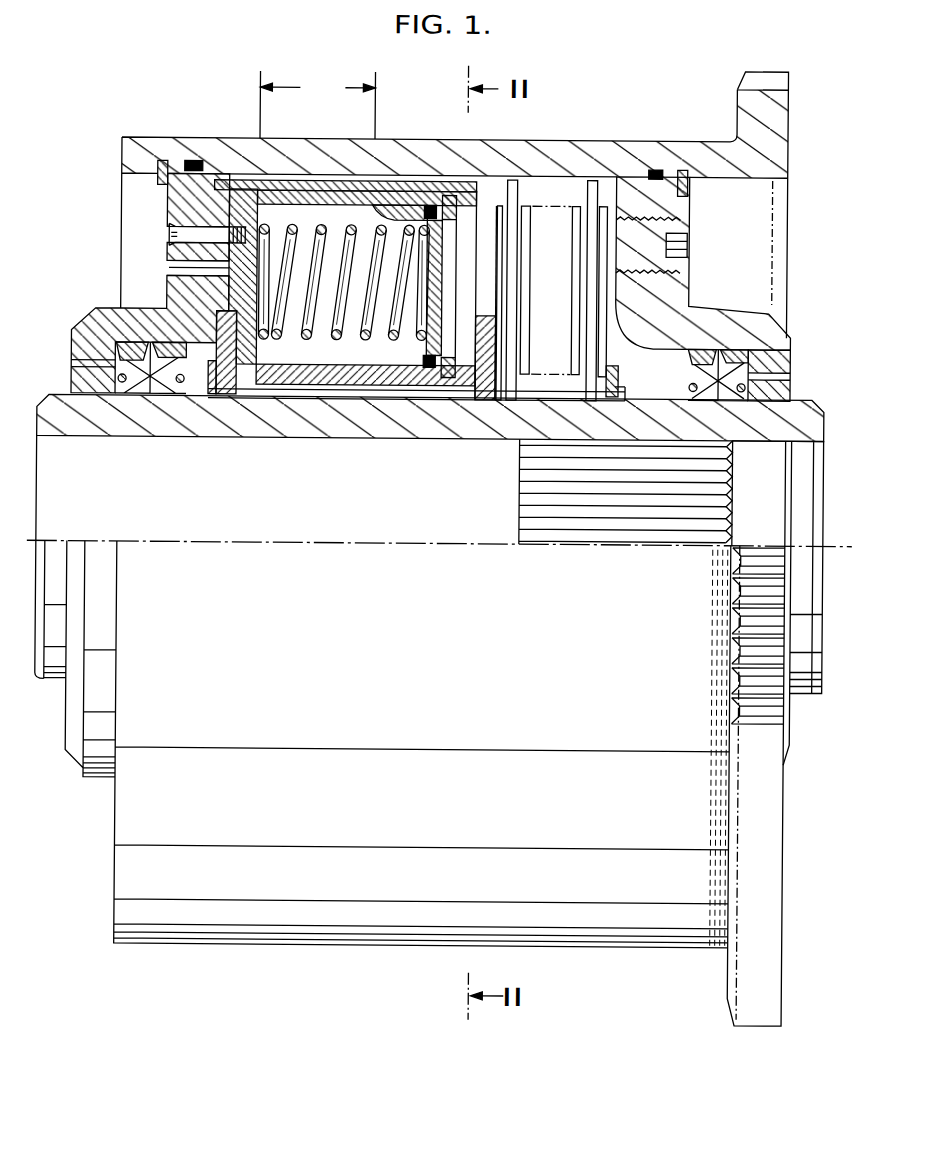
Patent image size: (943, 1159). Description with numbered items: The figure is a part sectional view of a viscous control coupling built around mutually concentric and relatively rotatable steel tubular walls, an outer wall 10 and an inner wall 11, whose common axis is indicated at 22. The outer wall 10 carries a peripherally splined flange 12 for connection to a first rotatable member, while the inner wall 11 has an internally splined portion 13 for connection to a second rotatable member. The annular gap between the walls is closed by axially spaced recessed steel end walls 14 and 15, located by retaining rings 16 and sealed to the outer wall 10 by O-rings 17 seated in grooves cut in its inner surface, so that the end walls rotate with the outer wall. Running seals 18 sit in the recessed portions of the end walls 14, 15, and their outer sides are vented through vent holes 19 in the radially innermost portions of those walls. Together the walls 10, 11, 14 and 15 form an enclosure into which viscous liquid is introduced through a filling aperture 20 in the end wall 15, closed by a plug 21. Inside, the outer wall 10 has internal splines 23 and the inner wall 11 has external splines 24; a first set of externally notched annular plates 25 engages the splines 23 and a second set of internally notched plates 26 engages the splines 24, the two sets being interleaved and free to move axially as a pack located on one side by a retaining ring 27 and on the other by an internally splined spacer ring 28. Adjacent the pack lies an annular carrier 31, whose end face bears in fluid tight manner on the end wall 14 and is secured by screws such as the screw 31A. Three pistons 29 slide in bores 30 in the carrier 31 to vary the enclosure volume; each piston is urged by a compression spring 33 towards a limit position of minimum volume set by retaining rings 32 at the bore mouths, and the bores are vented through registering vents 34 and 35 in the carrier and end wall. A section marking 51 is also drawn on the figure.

The outer tubular wall 10 is at (565, 157).
The inner tubular wall 11 is at (203, 412).
The splined flange 12 is at (789, 107).
The internally splined portion 13 is at (728, 477).
The end wall 14 is at (172, 210).
The end wall 15 is at (680, 300).
The retaining ring 16 is at (160, 166).
The O-ring 17 is at (194, 160).
The running seal 18 is at (150, 400).
The vent hole 19 is at (90, 355).
The filling aperture 20 is at (675, 271).
The plug 21 is at (688, 236).
The coupling axis 22 is at (402, 528).
The internal spline 23 is at (568, 188).
The external spline 24 is at (550, 383).
The first set of annular plates 25 is at (513, 190).
The second set of annular plates 26 is at (528, 310).
The retaining ring 27 is at (622, 374).
The spacer ring 28 is at (490, 358).
The piston 29 is at (432, 316).
The bore 30 is at (307, 348).
The annular carrier 31 is at (232, 356).
The screw 31A is at (170, 232).
The retaining ring 32 is at (447, 192).
The compression spring 33 is at (340, 343).
The vent 34 is at (248, 270).
The vent 35 is at (170, 262).
The dimension 51 is at (318, 105).